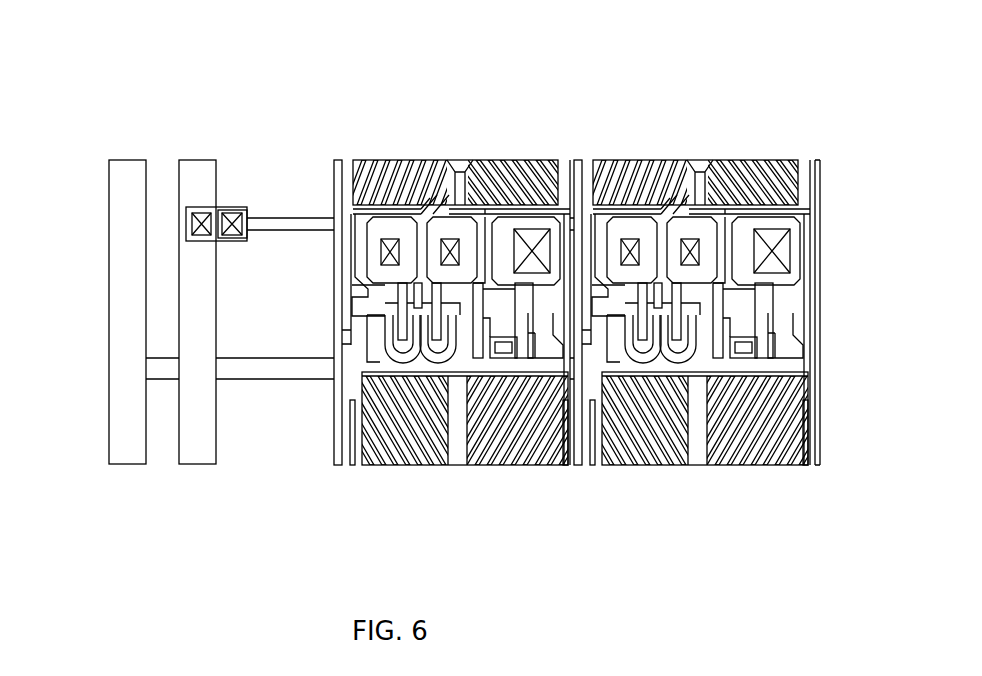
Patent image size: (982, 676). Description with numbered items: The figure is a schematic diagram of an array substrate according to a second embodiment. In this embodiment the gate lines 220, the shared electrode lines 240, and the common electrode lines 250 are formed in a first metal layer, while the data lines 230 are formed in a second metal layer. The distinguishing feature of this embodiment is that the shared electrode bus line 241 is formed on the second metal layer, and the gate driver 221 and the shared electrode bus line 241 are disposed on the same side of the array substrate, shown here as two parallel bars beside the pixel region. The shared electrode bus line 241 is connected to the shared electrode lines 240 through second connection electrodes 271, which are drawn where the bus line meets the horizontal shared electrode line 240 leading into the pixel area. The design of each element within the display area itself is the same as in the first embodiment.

The gate driver 221 is at (132, 453).
The shared electrode bus line 241 is at (197, 455).
The second connection electrode 271 is at (203, 207).
The shared electrode line 240 is at (302, 224).
The gate line 220 is at (308, 374).
The data line 230 is at (580, 185).
The common electrode line 250 is at (350, 463).